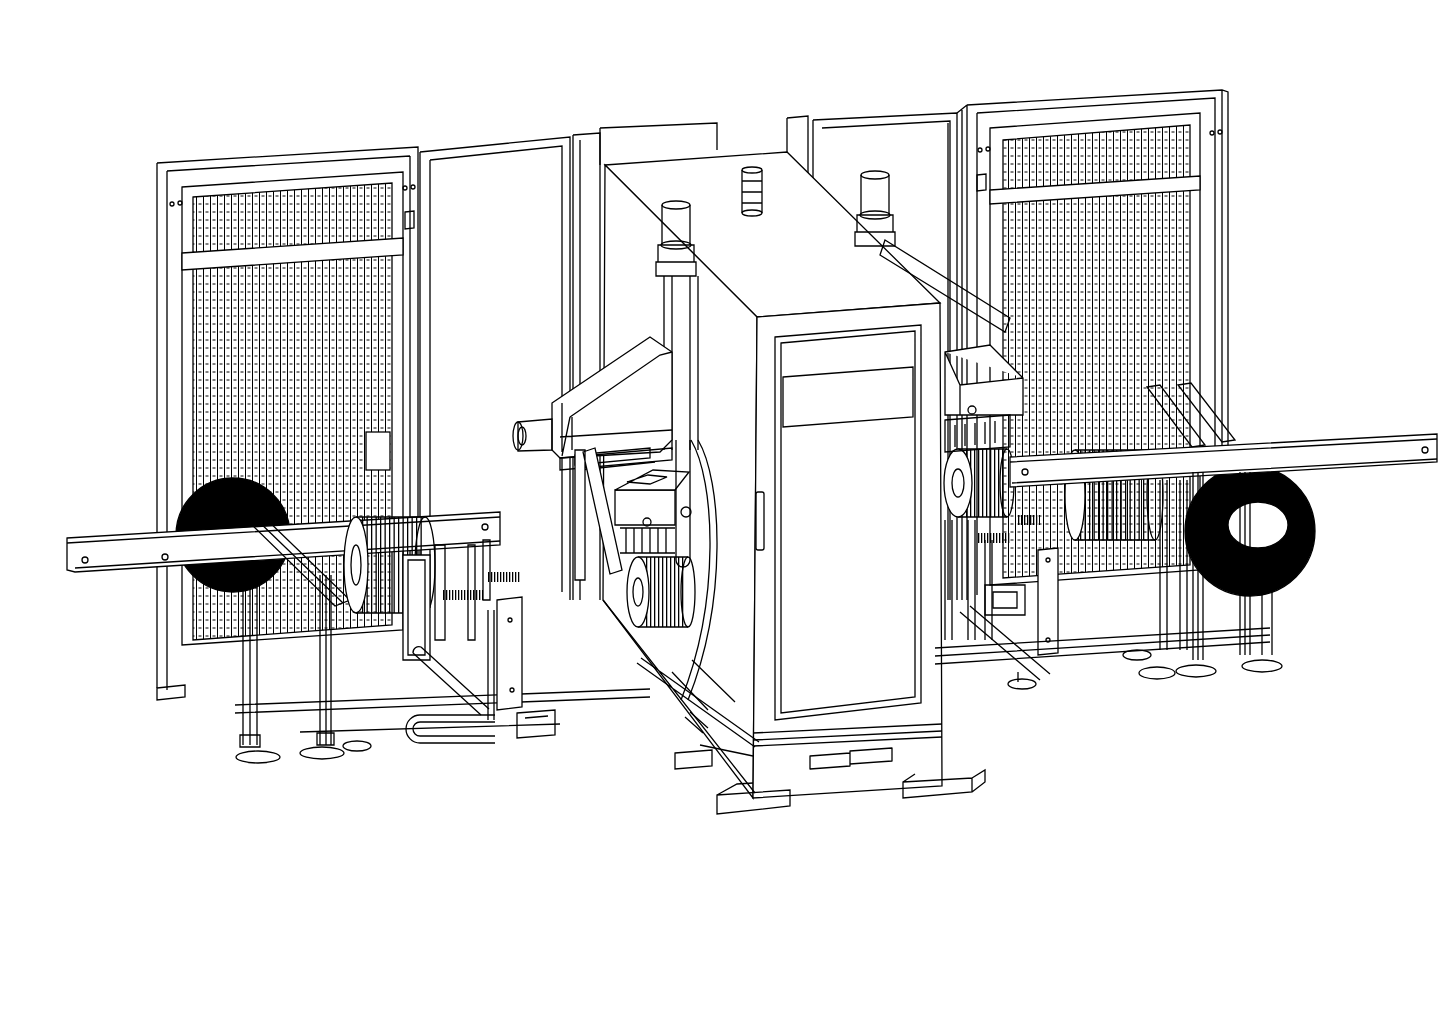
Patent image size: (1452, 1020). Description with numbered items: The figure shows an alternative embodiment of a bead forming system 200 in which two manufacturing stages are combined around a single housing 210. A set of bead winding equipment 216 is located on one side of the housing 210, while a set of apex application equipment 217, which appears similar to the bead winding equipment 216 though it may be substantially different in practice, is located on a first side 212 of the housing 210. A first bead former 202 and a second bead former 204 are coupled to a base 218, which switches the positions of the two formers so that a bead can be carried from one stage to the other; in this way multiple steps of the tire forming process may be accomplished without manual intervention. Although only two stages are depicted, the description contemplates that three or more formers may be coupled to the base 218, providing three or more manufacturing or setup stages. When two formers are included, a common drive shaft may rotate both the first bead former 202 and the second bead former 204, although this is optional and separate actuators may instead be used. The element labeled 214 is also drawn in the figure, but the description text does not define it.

The bead forming system 200 is at (254, 60).
The first bead former 202 is at (960, 497).
The second bead former 204 is at (632, 615).
The housing 210 is at (848, 723).
The first side 212 is at (945, 722).
The guide bar 214 is at (733, 700).
The bead winding equipment 216 is at (975, 405).
The apex application equipment 217 is at (635, 415).
The base 218 is at (700, 560).